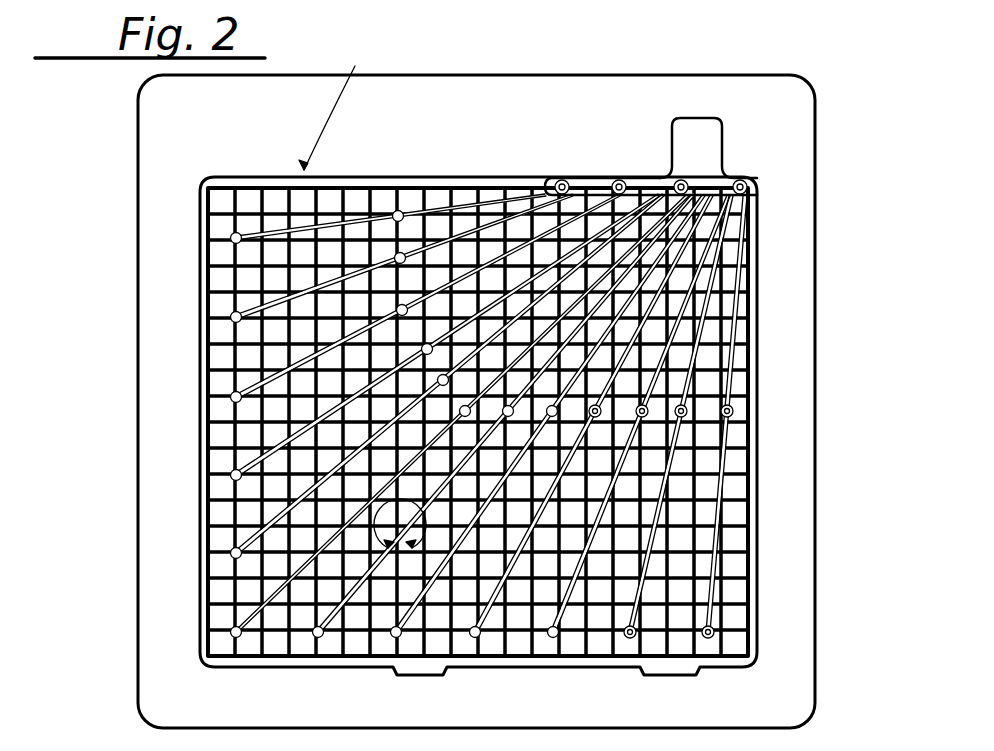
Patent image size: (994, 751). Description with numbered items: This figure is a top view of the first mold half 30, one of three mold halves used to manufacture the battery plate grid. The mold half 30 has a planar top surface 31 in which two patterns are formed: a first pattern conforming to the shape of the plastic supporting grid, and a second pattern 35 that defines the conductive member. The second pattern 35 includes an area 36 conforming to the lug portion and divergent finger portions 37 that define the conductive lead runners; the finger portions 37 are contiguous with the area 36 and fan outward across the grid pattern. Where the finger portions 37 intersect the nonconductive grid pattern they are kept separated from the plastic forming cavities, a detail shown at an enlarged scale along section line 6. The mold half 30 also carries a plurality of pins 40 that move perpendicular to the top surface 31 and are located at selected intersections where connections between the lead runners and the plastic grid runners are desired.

The first mold half 30 is at (825, 144).
The planar top surface 31 is at (790, 207).
The second pattern 35 is at (600, 185).
The area 36 is at (705, 140).
The divergent finger portions 37 is at (706, 303).
The pins 40 is at (702, 404).
The section line 6- 6 is at (400, 536).